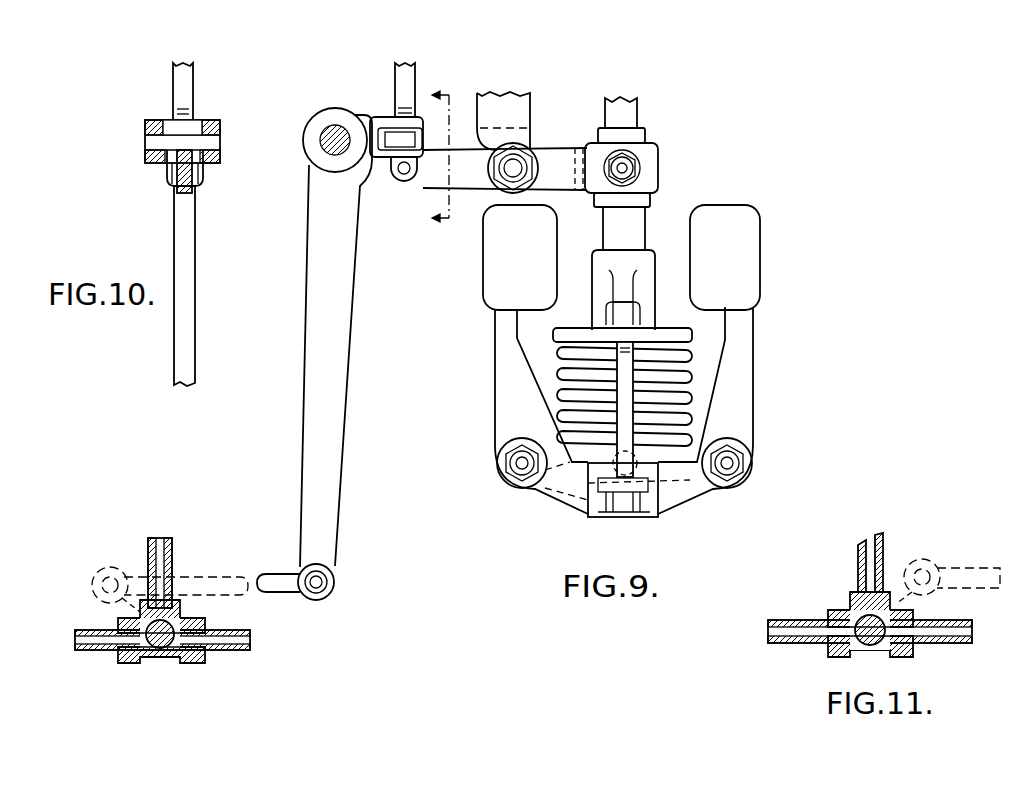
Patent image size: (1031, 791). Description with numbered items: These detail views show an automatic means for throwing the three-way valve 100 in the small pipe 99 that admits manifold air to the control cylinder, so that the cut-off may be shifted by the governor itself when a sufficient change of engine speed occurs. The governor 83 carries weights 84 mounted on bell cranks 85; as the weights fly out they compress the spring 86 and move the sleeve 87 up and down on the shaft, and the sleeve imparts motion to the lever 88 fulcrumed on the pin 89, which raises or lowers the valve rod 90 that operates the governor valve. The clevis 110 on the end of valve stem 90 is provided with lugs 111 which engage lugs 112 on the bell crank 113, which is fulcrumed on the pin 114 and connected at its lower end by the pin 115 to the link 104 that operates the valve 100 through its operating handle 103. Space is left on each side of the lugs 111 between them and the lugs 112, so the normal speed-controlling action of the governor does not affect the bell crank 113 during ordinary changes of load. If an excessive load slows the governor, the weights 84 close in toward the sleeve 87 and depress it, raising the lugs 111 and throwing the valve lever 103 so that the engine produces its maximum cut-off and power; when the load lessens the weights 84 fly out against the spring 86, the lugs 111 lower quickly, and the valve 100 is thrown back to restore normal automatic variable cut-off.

In FIG. 9, the governor 83 is at (668, 495).
In FIG. 9, the weights 84 is at (621, 257).
In FIG. 9, the bell cranks 85 is at (505, 420).
In FIG. 9, the spring 86 is at (680, 378).
In FIG. 9, the sleeve 87 is at (628, 233).
In FIG. 9, the lever 88 is at (477, 182).
In FIG. 9, the pin 89 is at (514, 167).
In FIG. 10, the valve rod 90 is at (183, 83).
In FIG. 9, the valve rod 90 is at (401, 83).
In FIG. 9, the pipe 99 is at (245, 637).
In FIG. 11, the pipe 99 is at (776, 643).
In FIG. 9, the three-way valve 100 is at (176, 660).
In FIG. 11, the three-way valve 100 is at (913, 650).
In FIG. 9, the operating handle 103 is at (126, 610).
In FIG. 11, the operating handle 103 is at (898, 601).
In FIG. 9, the link 104 is at (226, 582).
In FIG. 11, the link 104 is at (962, 580).
In FIG. 10, the clevis 110 is at (200, 188).
In FIG. 9, the clevis 110 is at (413, 170).
In FIG. 10, the lugs 111 is at (147, 142).
In FIG. 9, the lugs 111 is at (425, 136).
In FIG. 10, the lugs 112 is at (152, 121).
In FIG. 10, the bell crank 113 is at (187, 350).
In FIG. 9, the bell crank 113 is at (336, 341).
In FIG. 9, the pin 114 is at (335, 138).
In FIG. 9, the pin 115 is at (325, 589).